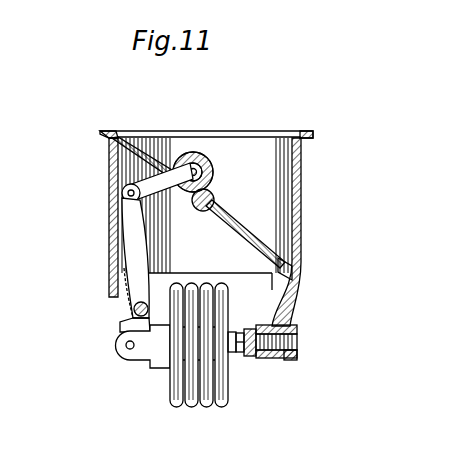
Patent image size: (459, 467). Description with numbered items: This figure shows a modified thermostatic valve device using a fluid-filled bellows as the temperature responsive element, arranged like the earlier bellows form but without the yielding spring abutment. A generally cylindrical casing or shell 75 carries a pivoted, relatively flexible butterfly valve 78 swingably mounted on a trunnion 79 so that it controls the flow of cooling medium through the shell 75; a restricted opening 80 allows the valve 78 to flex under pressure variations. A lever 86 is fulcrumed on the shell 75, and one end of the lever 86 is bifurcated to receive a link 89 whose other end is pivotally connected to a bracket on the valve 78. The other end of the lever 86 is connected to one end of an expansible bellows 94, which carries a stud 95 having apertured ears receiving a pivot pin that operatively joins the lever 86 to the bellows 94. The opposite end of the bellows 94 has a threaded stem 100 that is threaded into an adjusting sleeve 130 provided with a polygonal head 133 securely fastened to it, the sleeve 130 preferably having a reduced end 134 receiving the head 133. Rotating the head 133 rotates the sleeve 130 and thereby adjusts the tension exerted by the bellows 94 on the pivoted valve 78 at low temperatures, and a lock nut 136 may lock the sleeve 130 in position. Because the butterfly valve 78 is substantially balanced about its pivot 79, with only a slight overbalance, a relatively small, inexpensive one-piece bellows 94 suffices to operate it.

The casing 75 is at (301, 181).
The valve 78 is at (256, 237).
The trunnion 79 is at (213, 200).
The restricted opening 80 is at (290, 249).
The lever 86 is at (140, 254).
The link 89 is at (150, 172).
The bellows 94 is at (193, 406).
The stud 95 is at (156, 362).
The threaded stem 100 is at (236, 362).
The adjusting sleeve 130 is at (258, 357).
The polygonal head 133 is at (293, 357).
The reduced end 134 is at (293, 336).
The lock nut 136 is at (243, 357).